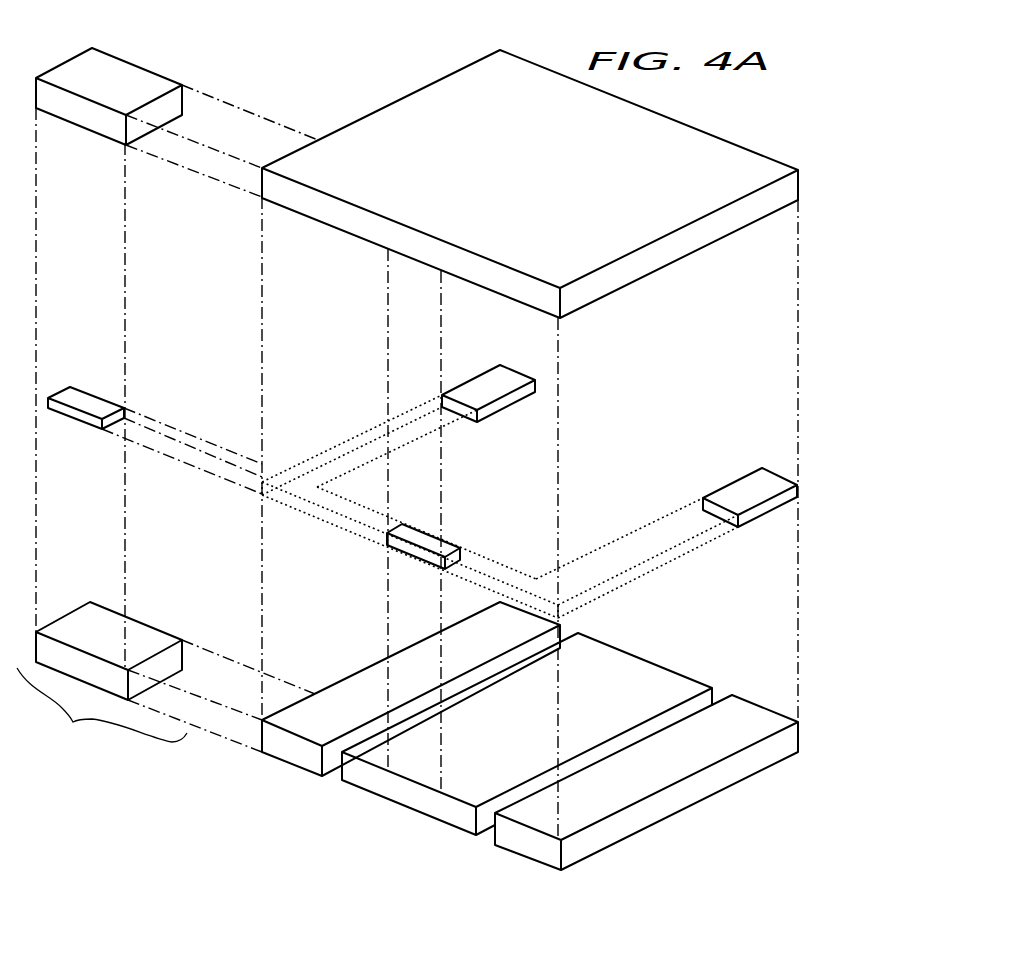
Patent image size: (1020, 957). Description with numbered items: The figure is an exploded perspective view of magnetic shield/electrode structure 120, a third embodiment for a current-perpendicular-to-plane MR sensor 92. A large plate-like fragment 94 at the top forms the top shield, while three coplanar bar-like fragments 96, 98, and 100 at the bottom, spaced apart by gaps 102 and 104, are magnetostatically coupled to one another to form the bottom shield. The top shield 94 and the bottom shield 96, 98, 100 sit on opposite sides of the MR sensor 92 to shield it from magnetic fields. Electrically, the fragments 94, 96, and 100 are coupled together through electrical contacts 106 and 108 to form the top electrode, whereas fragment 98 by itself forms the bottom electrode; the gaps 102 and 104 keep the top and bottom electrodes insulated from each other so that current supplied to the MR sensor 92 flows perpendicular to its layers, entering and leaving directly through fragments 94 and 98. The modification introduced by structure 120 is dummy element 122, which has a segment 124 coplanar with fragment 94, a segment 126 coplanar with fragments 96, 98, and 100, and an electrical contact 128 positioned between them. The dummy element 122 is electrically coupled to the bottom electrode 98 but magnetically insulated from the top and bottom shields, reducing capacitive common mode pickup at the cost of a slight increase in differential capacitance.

The MR sensor 92 is at (422, 537).
The fragment forming top shield 94 is at (410, 168).
The fragment of bottom shield 96 is at (757, 718).
The fragment forming bottom electrode 98 is at (627, 663).
The fragment of bottom shield 100 is at (338, 690).
The gap 102 is at (473, 848).
The gap 104 is at (329, 788).
The electrical contact 106 is at (773, 483).
The electrical contact 108 is at (486, 386).
The magnetic shield/electrode structure 120 is at (819, 121).
The dummy element 122 is at (102, 718).
The segment 124 is at (125, 87).
The segment 126 is at (90, 622).
The electrical contact 128 is at (85, 402).